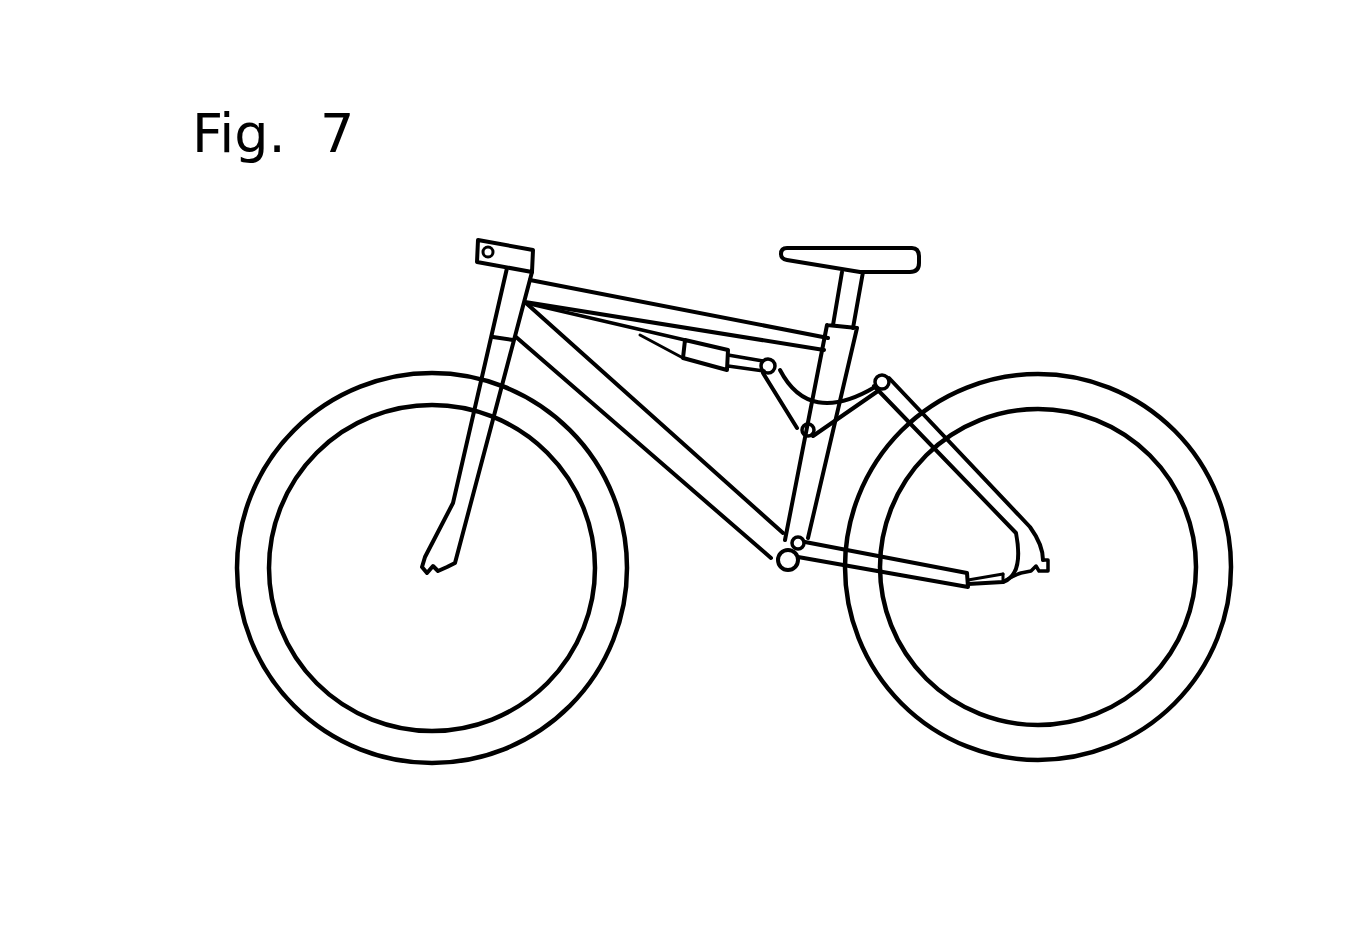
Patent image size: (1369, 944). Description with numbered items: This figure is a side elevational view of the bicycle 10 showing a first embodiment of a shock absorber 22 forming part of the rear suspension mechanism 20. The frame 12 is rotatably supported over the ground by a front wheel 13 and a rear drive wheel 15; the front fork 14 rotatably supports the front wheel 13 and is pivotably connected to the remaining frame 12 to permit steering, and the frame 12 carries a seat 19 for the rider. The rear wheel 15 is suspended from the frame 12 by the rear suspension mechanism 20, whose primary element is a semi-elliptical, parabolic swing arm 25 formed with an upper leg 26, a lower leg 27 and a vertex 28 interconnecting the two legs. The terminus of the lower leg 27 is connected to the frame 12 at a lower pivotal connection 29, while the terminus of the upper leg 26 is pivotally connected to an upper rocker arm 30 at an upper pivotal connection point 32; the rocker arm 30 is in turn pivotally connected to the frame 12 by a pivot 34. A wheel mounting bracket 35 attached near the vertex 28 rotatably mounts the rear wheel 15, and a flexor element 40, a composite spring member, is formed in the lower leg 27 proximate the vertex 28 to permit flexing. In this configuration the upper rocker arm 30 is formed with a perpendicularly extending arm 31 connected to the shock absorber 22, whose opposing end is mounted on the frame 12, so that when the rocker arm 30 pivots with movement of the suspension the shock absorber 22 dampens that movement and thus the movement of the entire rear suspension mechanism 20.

The bicycle 10 is at (967, 202).
The frame 12 is at (643, 298).
The front wheel 13 is at (515, 728).
The front fork 14 is at (452, 472).
The rear drive wheel 15 is at (1163, 433).
The seat 19 is at (832, 247).
The rear suspension mechanism 20 is at (825, 640).
The shock absorber 22 is at (698, 363).
The semi-elliptical swing arm 25 is at (1008, 460).
The upper leg 26 is at (912, 393).
The lower leg 27 is at (913, 578).
The vertex 28 is at (1007, 567).
The lower pivotal connection 29 is at (775, 552).
The upper rocker arm 30 is at (858, 362).
The perpendicularly extending arm 31 is at (765, 384).
The upper pivotal connection point 32 is at (890, 372).
The pivot 34 is at (802, 432).
The wheel mounting bracket 35 is at (1037, 553).
The flexor element 40 is at (997, 580).